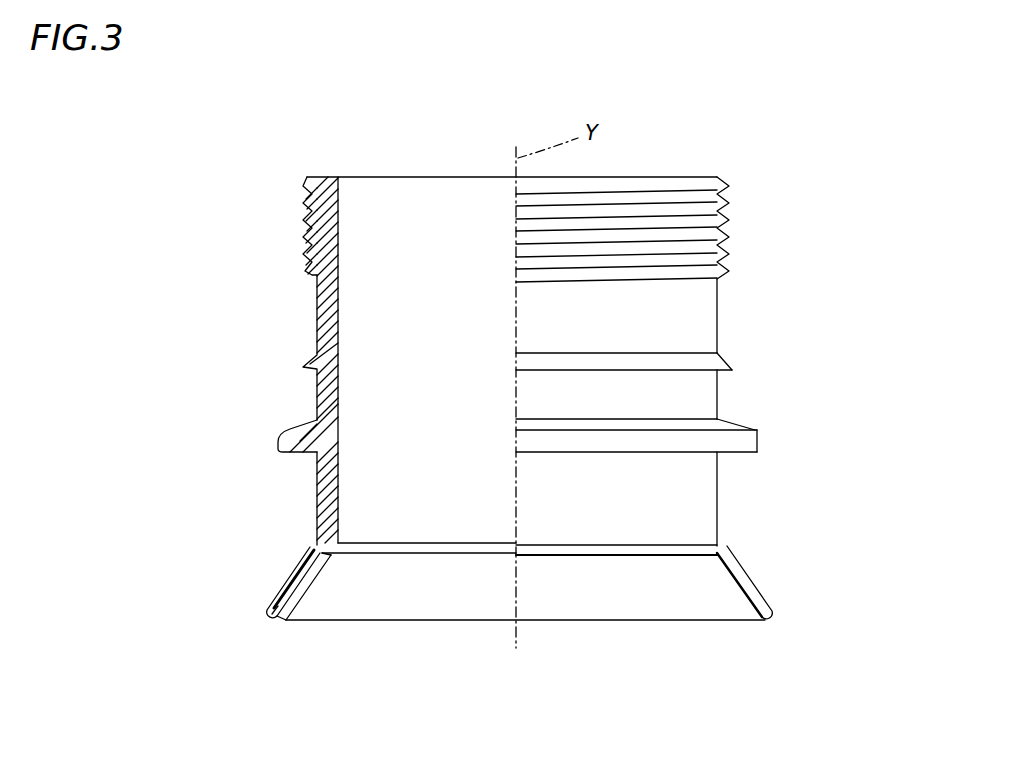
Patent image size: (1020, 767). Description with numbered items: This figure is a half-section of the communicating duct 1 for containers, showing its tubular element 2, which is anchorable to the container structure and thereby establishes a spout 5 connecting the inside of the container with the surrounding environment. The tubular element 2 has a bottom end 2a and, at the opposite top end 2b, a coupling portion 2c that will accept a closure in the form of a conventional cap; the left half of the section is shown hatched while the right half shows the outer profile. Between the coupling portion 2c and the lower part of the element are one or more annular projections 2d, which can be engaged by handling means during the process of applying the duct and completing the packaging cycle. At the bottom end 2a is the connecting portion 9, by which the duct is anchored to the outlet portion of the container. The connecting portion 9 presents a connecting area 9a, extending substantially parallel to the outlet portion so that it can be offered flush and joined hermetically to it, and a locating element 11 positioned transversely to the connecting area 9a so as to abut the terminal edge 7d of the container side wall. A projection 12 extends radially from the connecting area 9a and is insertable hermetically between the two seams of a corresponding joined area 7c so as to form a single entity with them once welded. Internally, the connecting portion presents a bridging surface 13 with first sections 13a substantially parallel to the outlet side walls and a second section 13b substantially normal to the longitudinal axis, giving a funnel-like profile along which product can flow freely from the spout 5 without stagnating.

The communicating duct 1 is at (800, 193).
The tubular element 2 is at (302, 305).
The bottom end 2a is at (731, 514).
The top end 2b is at (745, 324).
The coupling portion 2c is at (287, 210).
The annular projection 2d is at (285, 430).
The spout 5 is at (415, 213).
The joined area 7c is at (741, 598).
The terminal edge 7d is at (307, 596).
The connecting portion 9 is at (322, 583).
The connecting area 9a is at (280, 609).
The locating element 11 is at (313, 552).
The projection 12 is at (290, 583).
The bridging surface 13 is at (300, 612).
The first section 13a is at (316, 588).
The second section 13b is at (272, 625).